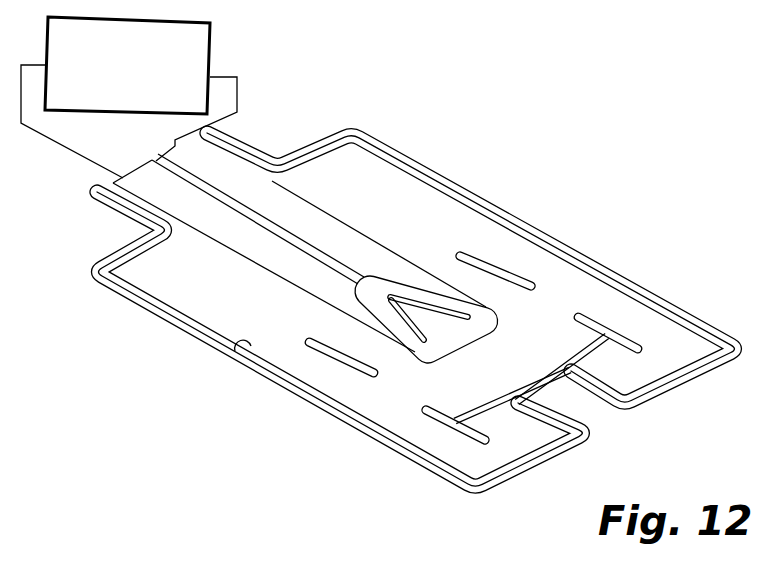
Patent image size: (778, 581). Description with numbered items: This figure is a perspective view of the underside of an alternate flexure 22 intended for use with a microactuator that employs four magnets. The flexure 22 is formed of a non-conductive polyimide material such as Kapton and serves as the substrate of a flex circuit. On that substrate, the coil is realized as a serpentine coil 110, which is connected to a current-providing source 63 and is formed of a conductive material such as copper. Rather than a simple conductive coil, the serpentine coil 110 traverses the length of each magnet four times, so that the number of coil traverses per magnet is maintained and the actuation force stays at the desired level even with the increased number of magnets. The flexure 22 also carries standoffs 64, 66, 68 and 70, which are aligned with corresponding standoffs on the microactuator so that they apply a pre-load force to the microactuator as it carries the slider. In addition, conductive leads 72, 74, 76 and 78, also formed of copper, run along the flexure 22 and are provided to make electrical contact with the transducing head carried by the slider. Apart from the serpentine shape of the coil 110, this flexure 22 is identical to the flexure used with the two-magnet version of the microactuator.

The flexure 22 is at (415, 309).
The current-providing source 63 is at (212, 42).
The standoff 64 is at (347, 370).
The standoff 66 is at (437, 432).
The standoff 68 is at (543, 247).
The standoff 70 is at (614, 336).
The conductive lead 72 is at (339, 339).
The conductive lead 74 is at (238, 360).
The conductive lead 76 is at (470, 192).
The conductive lead 78 is at (512, 266).
The serpentine coil 110 is at (381, 266).